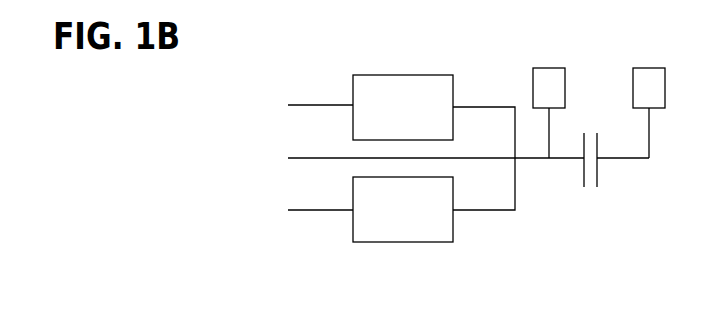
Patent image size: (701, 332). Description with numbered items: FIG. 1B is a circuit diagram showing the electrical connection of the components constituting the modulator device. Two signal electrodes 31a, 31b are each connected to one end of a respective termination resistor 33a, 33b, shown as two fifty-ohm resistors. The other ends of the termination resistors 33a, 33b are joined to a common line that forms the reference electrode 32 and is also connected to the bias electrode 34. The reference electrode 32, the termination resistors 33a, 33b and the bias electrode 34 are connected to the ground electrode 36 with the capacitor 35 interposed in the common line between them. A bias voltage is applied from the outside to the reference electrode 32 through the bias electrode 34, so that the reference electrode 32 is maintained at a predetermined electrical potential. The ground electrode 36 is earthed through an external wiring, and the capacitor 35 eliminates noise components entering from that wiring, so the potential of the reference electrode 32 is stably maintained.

The signal electrode 31a is at (298, 105).
The signal electrode 31b is at (298, 210).
The reference electrode 32 is at (298, 157).
The termination resistor 33a is at (403, 83).
The termination resistor 33b is at (403, 237).
The bias electrode 34 is at (548, 87).
The capacitor 35 is at (585, 190).
The ground electrode 36 is at (631, 87).